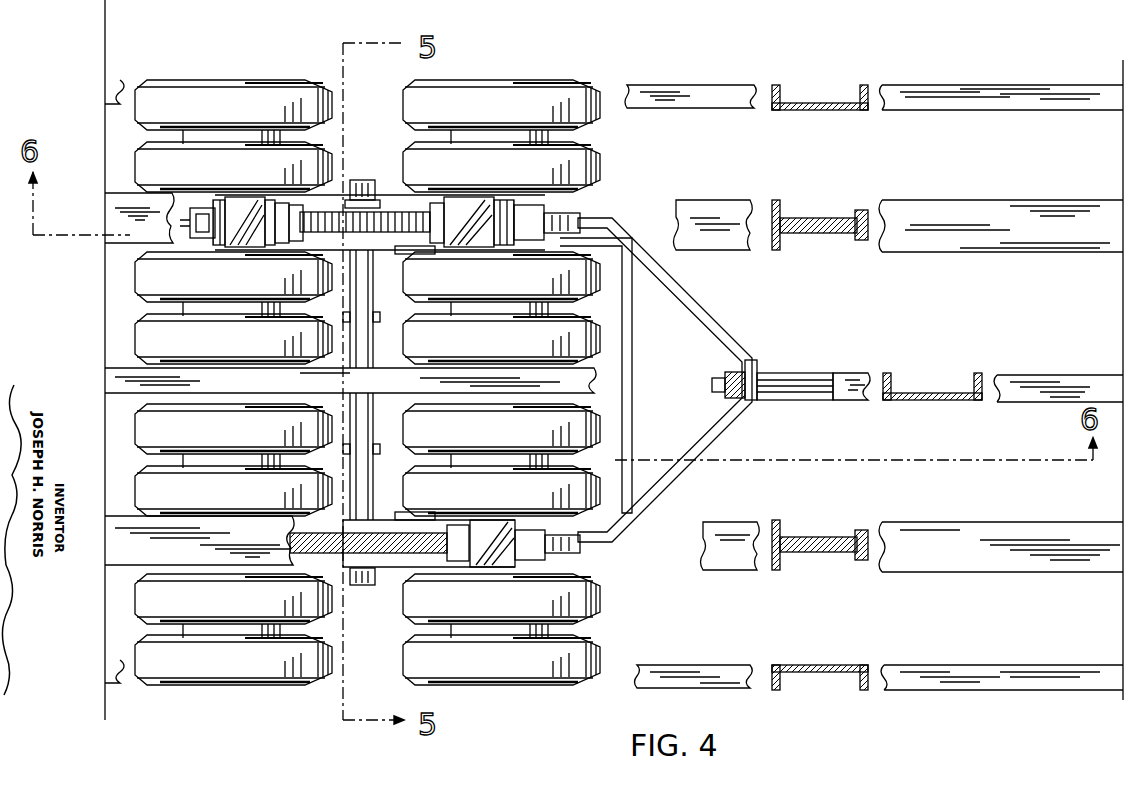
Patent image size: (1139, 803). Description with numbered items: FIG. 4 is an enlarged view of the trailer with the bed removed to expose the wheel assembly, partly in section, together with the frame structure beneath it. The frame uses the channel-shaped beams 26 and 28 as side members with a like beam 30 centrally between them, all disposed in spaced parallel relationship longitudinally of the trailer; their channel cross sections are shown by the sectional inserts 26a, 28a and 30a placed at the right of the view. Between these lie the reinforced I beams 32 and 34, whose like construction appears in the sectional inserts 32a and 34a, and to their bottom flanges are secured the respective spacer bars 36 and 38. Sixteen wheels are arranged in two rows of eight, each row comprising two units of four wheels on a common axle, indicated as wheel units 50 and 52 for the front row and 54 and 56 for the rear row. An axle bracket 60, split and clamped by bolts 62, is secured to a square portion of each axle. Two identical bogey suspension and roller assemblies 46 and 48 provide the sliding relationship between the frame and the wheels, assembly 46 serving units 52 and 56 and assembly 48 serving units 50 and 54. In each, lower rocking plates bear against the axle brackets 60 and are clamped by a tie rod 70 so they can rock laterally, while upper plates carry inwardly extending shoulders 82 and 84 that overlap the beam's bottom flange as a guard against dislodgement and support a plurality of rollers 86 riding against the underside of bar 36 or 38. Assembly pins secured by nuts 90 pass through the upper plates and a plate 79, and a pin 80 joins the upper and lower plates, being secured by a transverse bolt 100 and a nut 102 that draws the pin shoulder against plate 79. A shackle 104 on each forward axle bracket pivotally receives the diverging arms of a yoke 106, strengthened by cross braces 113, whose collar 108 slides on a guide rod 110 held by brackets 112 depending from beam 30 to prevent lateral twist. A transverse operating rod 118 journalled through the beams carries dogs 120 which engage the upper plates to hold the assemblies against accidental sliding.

The beam 26 is at (988, 92).
The sectional insert 26a is at (812, 110).
The beam 28 is at (1073, 670).
The sectional insert 28a is at (818, 665).
The beam 30 is at (1069, 380).
The sectional insert 30a is at (926, 400).
The reinforced I beam 32 is at (1002, 208).
The sectional insert 32a is at (822, 218).
The beam 34 is at (1062, 530).
The sectional insert 34a is at (812, 553).
The spacer bar 36 is at (872, 210).
The spacer bar 38 is at (872, 560).
The bogey suspension and roller assembly 46 is at (398, 166).
The bogey suspension and roller assembly 48 is at (388, 592).
The wheel unit 50 is at (602, 592).
The wheel unit 52 is at (610, 160).
The wheel unit 54 is at (120, 583).
The wheel unit 56 is at (118, 158).
The axle bracket 60 is at (255, 205).
The bolts 62 is at (216, 205).
The tie rod 70 is at (190, 220).
The plate 79 is at (414, 254).
The pin 80 is at (345, 424).
The shoulder 82 is at (235, 240).
The shoulder 84 is at (268, 240).
The rollers 86 is at (295, 242).
The nuts 90 is at (325, 192).
The bolt 100 is at (382, 318).
The nut 102 is at (362, 180).
The shackle 104 is at (585, 214).
The yoke 106 is at (696, 278).
The collar 108 is at (758, 372).
The guide rod 110 is at (806, 397).
The brackets 112 is at (726, 372).
The cross braces 113 is at (632, 404).
The operating rod 118 is at (378, 426).
The dogs 120 is at (492, 522).